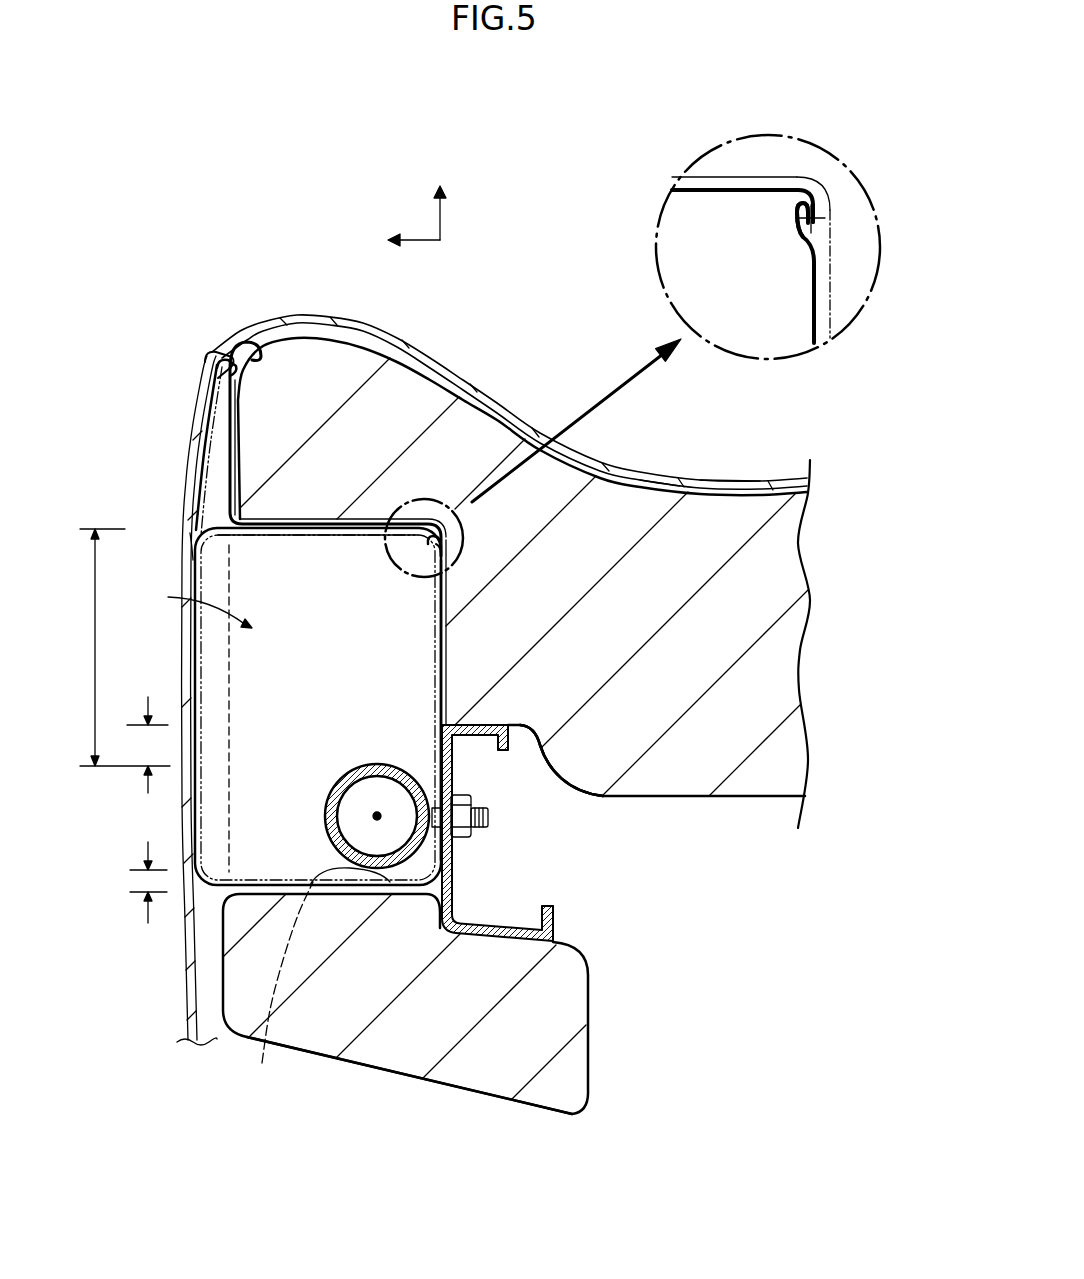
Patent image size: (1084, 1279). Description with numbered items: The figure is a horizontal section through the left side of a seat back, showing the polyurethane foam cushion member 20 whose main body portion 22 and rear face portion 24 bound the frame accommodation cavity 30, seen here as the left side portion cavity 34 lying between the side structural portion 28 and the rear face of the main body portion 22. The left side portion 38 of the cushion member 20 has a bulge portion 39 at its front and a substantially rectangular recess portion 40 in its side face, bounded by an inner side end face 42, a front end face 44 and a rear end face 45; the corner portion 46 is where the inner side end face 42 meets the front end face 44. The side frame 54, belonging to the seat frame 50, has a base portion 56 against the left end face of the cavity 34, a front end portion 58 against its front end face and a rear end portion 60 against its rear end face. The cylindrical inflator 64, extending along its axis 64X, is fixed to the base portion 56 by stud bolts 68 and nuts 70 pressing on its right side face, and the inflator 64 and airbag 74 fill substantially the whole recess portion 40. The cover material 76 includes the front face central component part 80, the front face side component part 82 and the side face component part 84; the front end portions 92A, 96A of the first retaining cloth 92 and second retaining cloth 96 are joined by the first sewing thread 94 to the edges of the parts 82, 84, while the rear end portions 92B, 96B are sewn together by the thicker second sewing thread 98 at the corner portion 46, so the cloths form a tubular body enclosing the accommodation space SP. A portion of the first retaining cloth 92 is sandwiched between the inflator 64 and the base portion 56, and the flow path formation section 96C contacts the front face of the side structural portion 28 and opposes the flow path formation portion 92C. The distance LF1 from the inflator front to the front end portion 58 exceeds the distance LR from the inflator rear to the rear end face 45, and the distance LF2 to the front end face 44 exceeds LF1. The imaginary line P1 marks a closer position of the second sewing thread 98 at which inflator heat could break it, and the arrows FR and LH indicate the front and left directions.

The cushion member 20 is at (800, 760).
The main body portion 22 is at (800, 617).
The rear face portion 24 is at (500, 1100).
The side structural portion 28 is at (443, 1086).
The frame accommodation cavity 30 is at (540, 758).
The left side portion cavity 34 is at (561, 760).
The side portion 38 is at (298, 1032).
The bulge portion 39 is at (392, 372).
The recess portion 40 is at (258, 540).
The inner side end face 42 is at (835, 300).
The front end face 44 is at (700, 176).
The rear end face 45 is at (285, 883).
The corner portion 46 is at (797, 177).
The bracket 50 is at (490, 925).
The side frame 54 is at (556, 930).
The base portion 56 is at (452, 862).
The front end portion 58 is at (478, 738).
The rear end portion 60 is at (540, 915).
The inflator 64 is at (330, 790).
The axis 64X is at (377, 812).
The stud bolt 68 is at (490, 820).
The nut 70 is at (468, 835).
The airbag 74 is at (185, 532).
The cover material 76 is at (658, 476).
The front face central component part 80 is at (715, 486).
The front face side component part 82 is at (450, 355).
The side face component part 84 is at (186, 990).
The first retaining cloth 92 is at (203, 805).
The one end portion of first retaining cloth 92A is at (216, 376).
The other end portion of first retaining cloth 92B is at (798, 232).
The flow path formation portion 92C is at (208, 442).
The first sewing thread 94 is at (226, 350).
The second retaining cloth 96 is at (330, 540).
The one end portion of second retaining cloth 96A is at (255, 340).
The other end portion of second retaining cloth 96B is at (818, 205).
The flow path formation section 96C is at (234, 456).
The second sewing thread 98 is at (825, 218).
The imaginary position P1 is at (276, 988).
The accommodation space SP is at (192, 604).
The distance LF1 is at (147, 787).
The distance LF2 is at (97, 636).
The distance LR is at (147, 920).
The vehicle front direction FR is at (442, 199).
The vehicle left direction LH is at (394, 241).